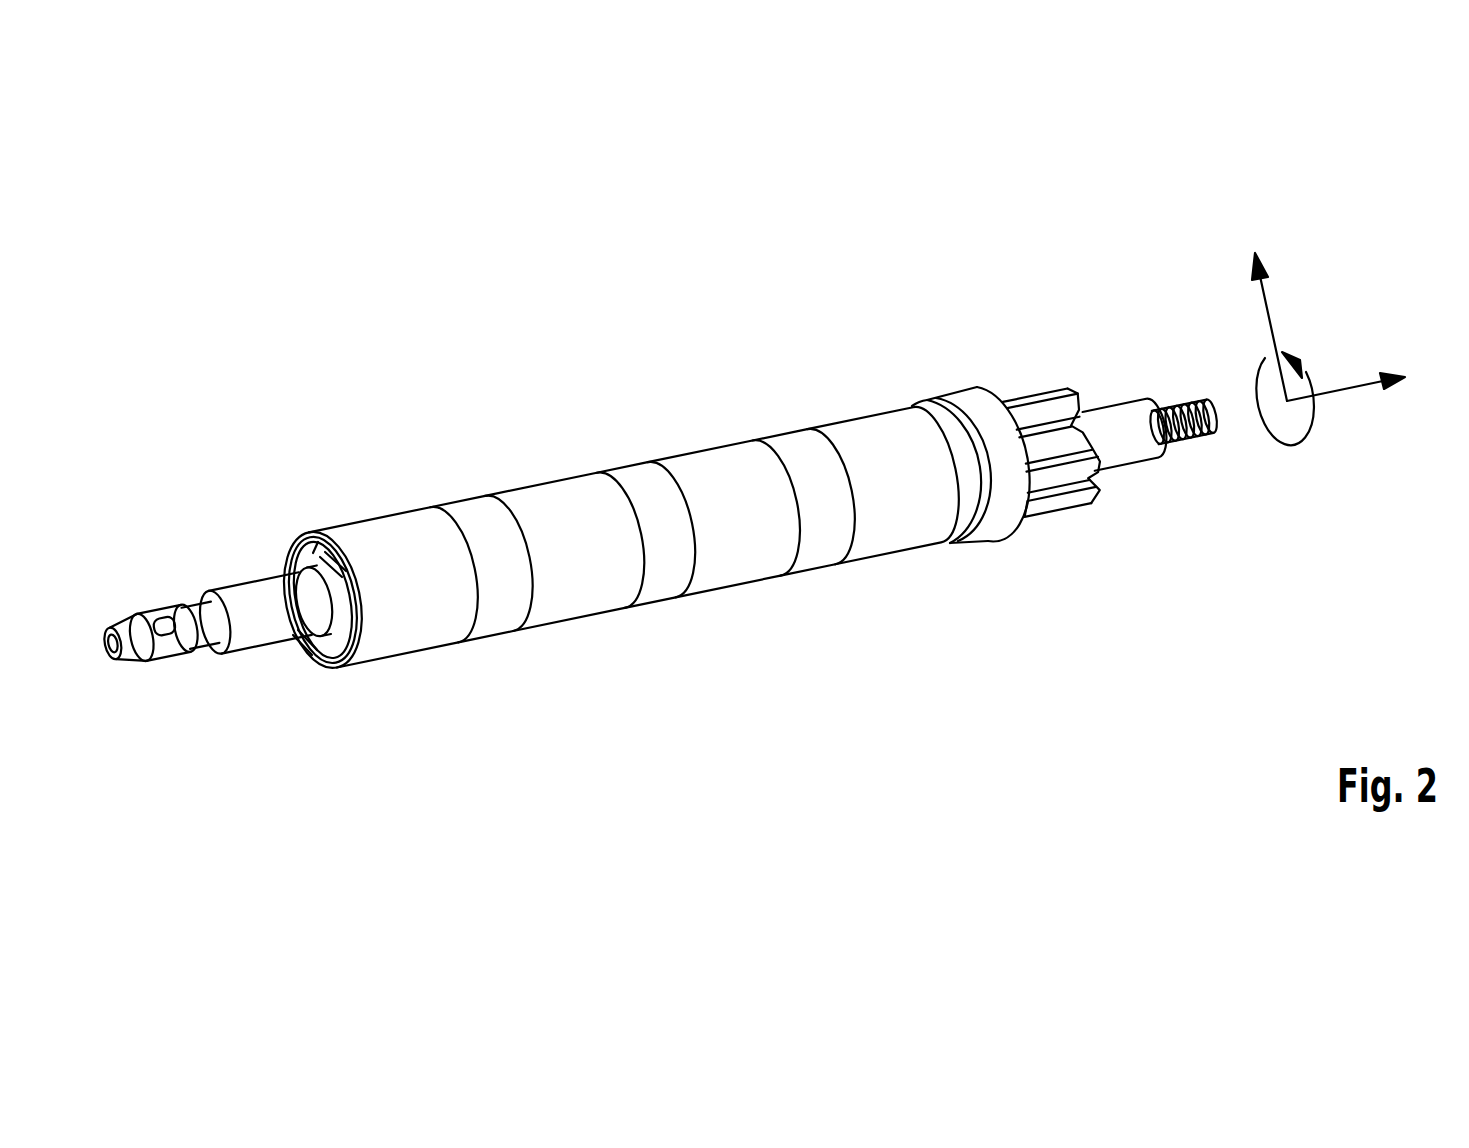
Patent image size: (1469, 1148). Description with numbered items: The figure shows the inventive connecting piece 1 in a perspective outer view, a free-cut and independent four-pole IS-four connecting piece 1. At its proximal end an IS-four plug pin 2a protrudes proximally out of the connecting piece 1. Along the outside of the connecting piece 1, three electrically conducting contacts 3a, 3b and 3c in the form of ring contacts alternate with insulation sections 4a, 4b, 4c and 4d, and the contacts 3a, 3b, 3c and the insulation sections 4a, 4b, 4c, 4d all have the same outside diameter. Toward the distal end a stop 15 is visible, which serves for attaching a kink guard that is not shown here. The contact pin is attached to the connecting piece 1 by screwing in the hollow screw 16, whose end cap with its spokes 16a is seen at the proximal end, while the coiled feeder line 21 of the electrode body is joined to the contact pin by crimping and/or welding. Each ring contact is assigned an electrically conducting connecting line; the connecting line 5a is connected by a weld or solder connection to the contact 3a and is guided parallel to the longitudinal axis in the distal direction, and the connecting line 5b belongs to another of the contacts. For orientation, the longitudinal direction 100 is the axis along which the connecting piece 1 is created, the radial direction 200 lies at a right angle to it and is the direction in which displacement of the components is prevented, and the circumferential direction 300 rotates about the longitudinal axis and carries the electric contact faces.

The connecting piece 1 is at (514, 290).
The IS-4 plug pin 2a is at (223, 578).
The electrically conducting contact 3a is at (489, 642).
The electrically conducting contact 3b is at (650, 612).
The electrically conducting contact 3c is at (812, 578).
The insulation section 4a is at (391, 512).
The insulation section 4b is at (547, 487).
The insulation section 4c is at (705, 452).
The insulation section 4d is at (864, 410).
The connecting line 5a is at (1035, 433).
The connecting line 5b is at (1062, 504).
The stop 15 is at (1003, 542).
The hollow screw 16 is at (306, 662).
The spokes 16a is at (318, 542).
The coiled feeder line 21 is at (1205, 442).
The longitudinal direction 100 is at (1368, 380).
The radial direction 200 is at (1261, 309).
The circumferential direction 300 is at (1298, 386).